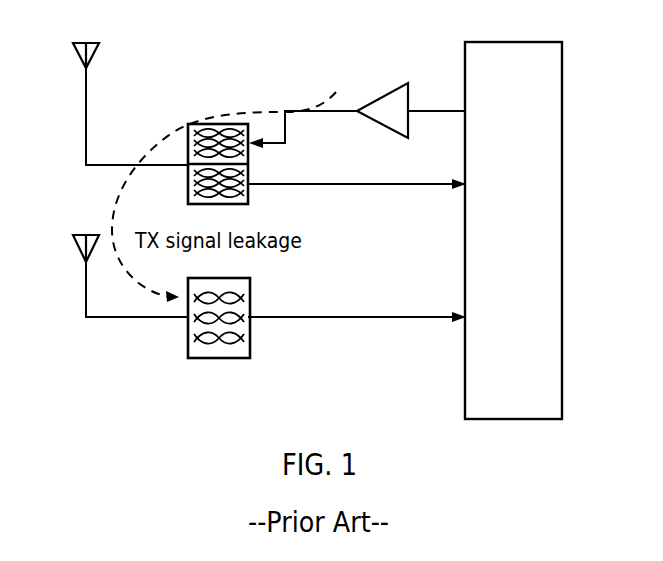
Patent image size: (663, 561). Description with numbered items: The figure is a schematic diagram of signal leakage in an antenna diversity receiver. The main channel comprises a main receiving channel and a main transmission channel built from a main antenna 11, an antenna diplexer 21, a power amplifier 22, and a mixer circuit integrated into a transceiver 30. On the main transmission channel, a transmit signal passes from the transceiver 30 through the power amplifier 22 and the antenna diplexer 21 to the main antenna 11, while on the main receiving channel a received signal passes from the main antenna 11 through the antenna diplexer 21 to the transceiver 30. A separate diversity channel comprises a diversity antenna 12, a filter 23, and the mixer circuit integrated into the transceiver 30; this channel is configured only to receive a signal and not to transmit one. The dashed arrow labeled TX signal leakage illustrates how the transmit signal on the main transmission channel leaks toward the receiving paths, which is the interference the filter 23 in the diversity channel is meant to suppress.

The main antenna 11 is at (85, 96).
The diversity antenna 12 is at (86, 290).
The antenna diplexer 21 is at (228, 124).
The power amplifier 22 is at (392, 103).
The filter 23 is at (242, 358).
The transceiver 30 is at (562, 327).